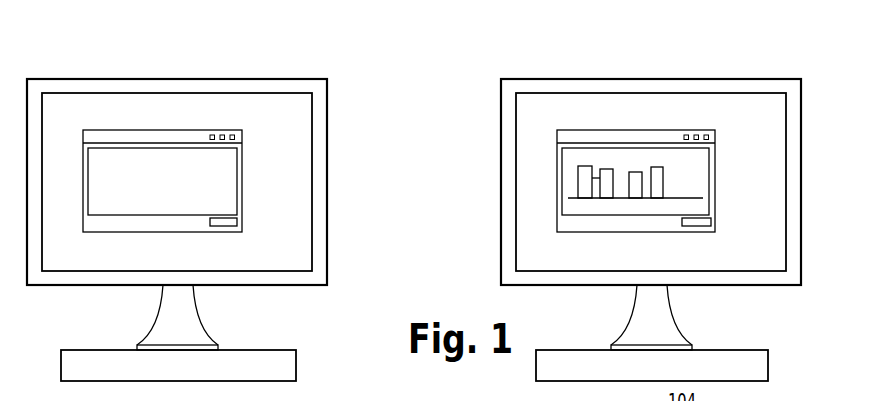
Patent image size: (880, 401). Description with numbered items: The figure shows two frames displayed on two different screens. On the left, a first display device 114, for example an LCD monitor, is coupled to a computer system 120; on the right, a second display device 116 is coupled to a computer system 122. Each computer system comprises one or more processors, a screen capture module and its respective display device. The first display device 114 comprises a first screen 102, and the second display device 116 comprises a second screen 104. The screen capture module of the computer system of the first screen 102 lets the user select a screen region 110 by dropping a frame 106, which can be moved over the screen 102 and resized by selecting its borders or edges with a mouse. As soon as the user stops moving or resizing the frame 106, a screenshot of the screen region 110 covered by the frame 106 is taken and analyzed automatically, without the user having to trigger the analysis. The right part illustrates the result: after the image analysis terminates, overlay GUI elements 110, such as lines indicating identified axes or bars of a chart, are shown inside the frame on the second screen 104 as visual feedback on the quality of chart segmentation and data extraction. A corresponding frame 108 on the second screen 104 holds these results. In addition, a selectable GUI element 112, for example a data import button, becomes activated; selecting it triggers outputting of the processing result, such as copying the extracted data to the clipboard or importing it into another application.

The first screen 102 is at (205, 108).
The second screen 104 is at (678, 108).
The frame 106 is at (133, 137).
The second application window 108 is at (608, 137).
The screen region 110 is at (215, 170).
The selectable GUI element 112 is at (228, 221).
The first display device 114 is at (190, 336).
The second display device 116 is at (667, 336).
The computer system 120 is at (272, 376).
The computer system 122 is at (745, 376).